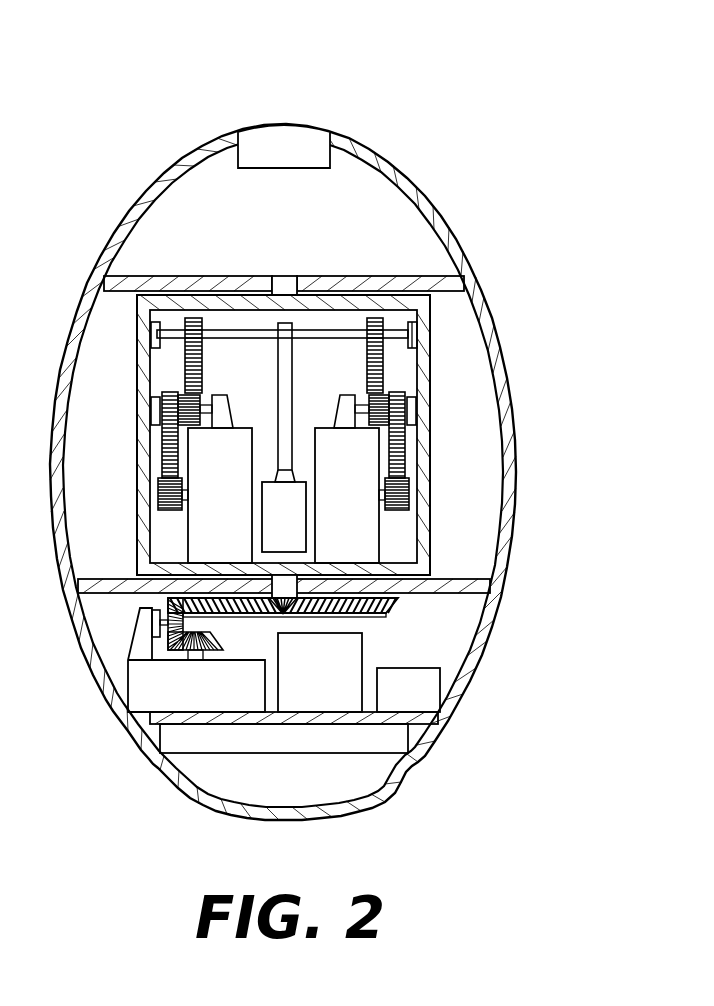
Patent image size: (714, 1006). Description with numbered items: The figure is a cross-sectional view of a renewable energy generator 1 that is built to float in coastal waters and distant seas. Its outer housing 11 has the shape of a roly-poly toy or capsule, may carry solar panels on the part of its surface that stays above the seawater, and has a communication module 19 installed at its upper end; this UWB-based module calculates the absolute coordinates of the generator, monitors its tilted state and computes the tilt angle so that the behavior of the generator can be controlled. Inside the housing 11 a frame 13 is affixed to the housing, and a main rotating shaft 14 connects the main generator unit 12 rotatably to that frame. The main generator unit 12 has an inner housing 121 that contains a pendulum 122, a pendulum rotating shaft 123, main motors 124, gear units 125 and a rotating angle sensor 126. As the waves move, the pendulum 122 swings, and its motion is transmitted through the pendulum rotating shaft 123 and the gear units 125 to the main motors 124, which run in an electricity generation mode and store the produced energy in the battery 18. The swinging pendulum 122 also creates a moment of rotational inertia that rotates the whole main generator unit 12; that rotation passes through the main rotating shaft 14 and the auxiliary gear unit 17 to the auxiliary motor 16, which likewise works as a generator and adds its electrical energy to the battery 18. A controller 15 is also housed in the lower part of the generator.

The renewable energy generator 1 is at (103, 30).
The housing 11 is at (368, 153).
The main generator unit 12 is at (378, 426).
The inner housing 121 is at (430, 365).
The pendulum 122 is at (413, 437).
The pendulum rotating shaft 123 is at (418, 342).
The main motors 124 is at (373, 512).
The gear units 125 is at (407, 436).
The rotating angle sensor 126 is at (402, 335).
The frame 13 is at (108, 283).
The main rotating shaft 14 is at (266, 578).
The controller 15 is at (436, 693).
The auxiliary motor 16 is at (130, 691).
The auxiliary gear unit 17 is at (400, 601).
The battery 18 is at (403, 740).
The communication module 19 is at (296, 130).